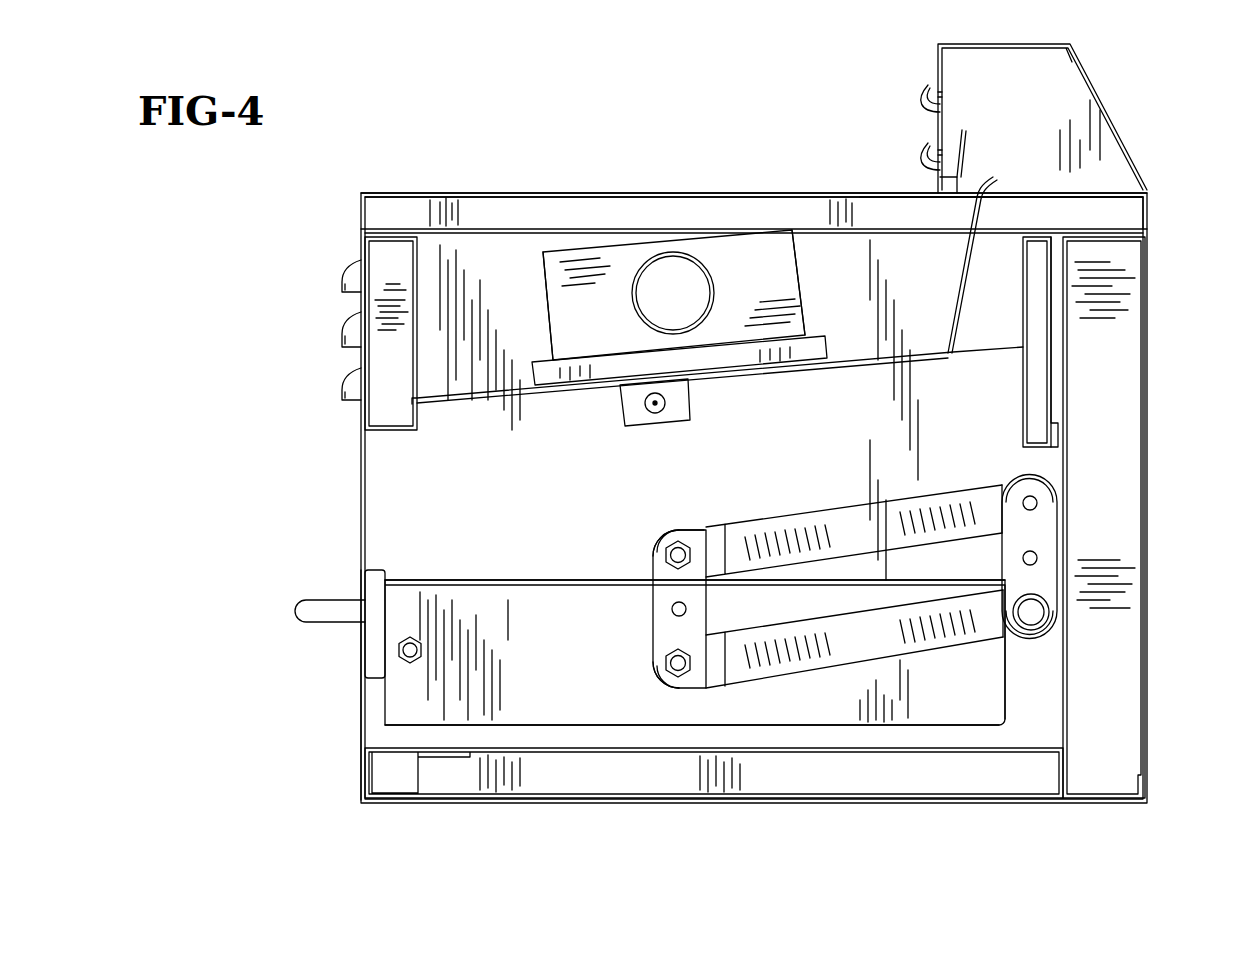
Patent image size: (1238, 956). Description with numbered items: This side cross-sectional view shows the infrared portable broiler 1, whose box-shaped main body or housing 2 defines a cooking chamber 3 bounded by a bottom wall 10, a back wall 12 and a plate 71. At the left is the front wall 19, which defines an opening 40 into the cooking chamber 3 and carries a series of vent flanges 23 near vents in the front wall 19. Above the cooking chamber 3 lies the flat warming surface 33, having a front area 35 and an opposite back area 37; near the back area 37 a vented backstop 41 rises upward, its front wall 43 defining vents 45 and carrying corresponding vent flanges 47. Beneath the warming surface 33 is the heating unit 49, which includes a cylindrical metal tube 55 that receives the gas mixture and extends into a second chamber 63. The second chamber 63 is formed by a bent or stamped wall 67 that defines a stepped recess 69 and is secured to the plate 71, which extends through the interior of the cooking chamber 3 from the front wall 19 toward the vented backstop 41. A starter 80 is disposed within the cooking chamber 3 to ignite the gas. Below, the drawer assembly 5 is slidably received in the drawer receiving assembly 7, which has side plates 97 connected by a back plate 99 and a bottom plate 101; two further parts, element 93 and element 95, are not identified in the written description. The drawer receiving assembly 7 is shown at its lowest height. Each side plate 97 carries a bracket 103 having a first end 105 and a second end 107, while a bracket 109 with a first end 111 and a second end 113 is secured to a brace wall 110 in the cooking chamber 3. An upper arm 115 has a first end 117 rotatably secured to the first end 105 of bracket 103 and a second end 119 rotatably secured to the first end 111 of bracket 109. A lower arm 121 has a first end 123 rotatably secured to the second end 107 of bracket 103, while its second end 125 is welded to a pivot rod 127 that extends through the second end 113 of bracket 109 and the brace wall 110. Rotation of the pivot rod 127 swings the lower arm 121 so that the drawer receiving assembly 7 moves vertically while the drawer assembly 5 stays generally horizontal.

The infrared portable broiler 1 is at (233, 235).
The main body or housing 2 is at (358, 215).
The cooking chamber 3 is at (425, 478).
The drawer assembly 5 is at (360, 668).
The drawer receiving assembly 7 is at (414, 576).
The bottom wall 10 is at (361, 768).
The back wall 12 is at (1056, 392).
The front wall 19 is at (358, 300).
The vent flanges 23 is at (350, 282).
The flat warming surface 33 is at (578, 192).
The front area 35 is at (385, 190).
The back area 37 is at (852, 190).
The opening 40 is at (383, 510).
The vented backstop 41 is at (935, 50).
The front wall of backstop 43 is at (941, 122).
The vents 45 is at (930, 97).
The vent flanges 47 is at (922, 92).
The heating unit 49 is at (535, 277).
The tube 55 is at (633, 260).
The second chamber 63 is at (737, 259).
The wall 67 is at (772, 279).
The stepped recess 69 is at (829, 348).
The plate 71 is at (478, 399).
The starter 80 is at (657, 411).
The end plate 93 is at (364, 650).
The handle rod 95 is at (294, 606).
The side plates 97 is at (482, 600).
The back plate 99 is at (1007, 697).
The bottom plate 101 is at (637, 727).
The bracket 103 is at (652, 623).
The first end 105 is at (660, 543).
The second end 107 is at (665, 686).
The bracket 109 is at (1059, 578).
The brace walls 110 is at (918, 441).
The first end 111 is at (1040, 478).
The second end 113 is at (1047, 631).
The upper arm 115 is at (795, 511).
The first end 117 is at (677, 538).
The second end 119 is at (992, 491).
The lower arm 121 is at (756, 672).
The first end 123 is at (664, 660).
The second end 125 is at (986, 627).
The pivot rod 127 is at (1049, 614).